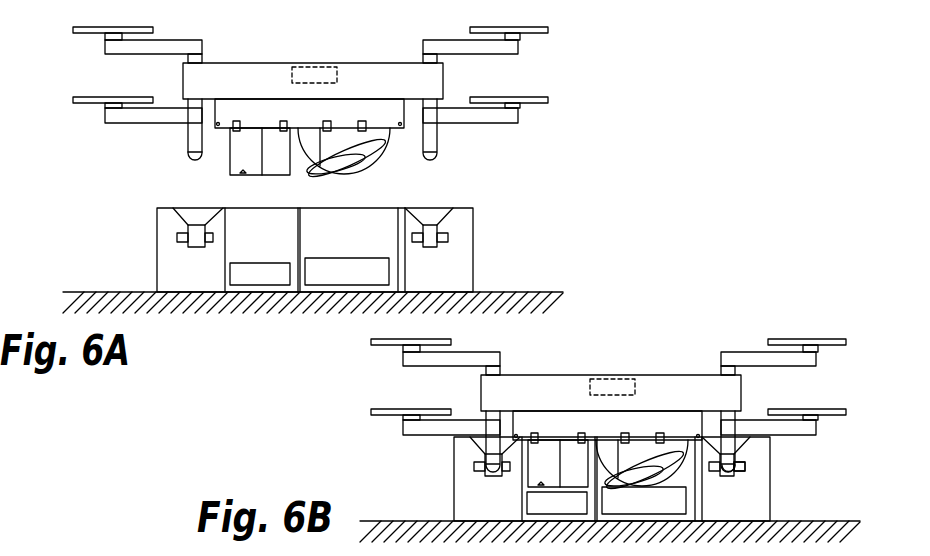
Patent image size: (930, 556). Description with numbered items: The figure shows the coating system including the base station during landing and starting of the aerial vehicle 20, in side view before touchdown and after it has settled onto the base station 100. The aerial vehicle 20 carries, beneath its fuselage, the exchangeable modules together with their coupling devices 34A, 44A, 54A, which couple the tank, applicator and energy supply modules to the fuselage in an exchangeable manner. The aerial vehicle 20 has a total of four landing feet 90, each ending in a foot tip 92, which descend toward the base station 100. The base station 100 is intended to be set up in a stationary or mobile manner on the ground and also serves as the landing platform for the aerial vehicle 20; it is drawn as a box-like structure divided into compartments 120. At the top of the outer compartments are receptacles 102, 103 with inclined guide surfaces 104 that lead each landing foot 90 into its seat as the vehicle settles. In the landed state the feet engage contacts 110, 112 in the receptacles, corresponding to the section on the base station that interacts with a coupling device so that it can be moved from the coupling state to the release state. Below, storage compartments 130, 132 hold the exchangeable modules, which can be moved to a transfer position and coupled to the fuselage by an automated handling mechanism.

In FIG. 6A, the aerial vehicle 20 is at (378, 113).
In FIG. 6A, the payload aircraft 34A is at (304, 100).
In FIG. 6A, the payload aircraft 44A is at (304, 100).
In FIG. 6A, the payload aircraft 54A is at (300, 127).
In FIG. 6A, the landing feet 90 is at (193, 163).
In FIG. 6A, the landing foot 92 is at (188, 151).
In FIG. 6A, the base station 100 is at (446, 280).
In FIG. 6A, the docking receptacle 102 is at (507, 210).
In FIG. 6A, the docking receptacle 103 is at (507, 210).
In FIG. 6A, the guide surface 104 is at (450, 218).
In FIG. 6B, the charging contact 110 is at (740, 461).
In FIG. 6B, the docking contact 112 is at (733, 468).
In FIG. 6A, the station compartment 120 is at (400, 208).
In FIG. 6A, the storage compartment 130 is at (297, 322).
In FIG. 6A, the storage compartment 132 is at (332, 275).